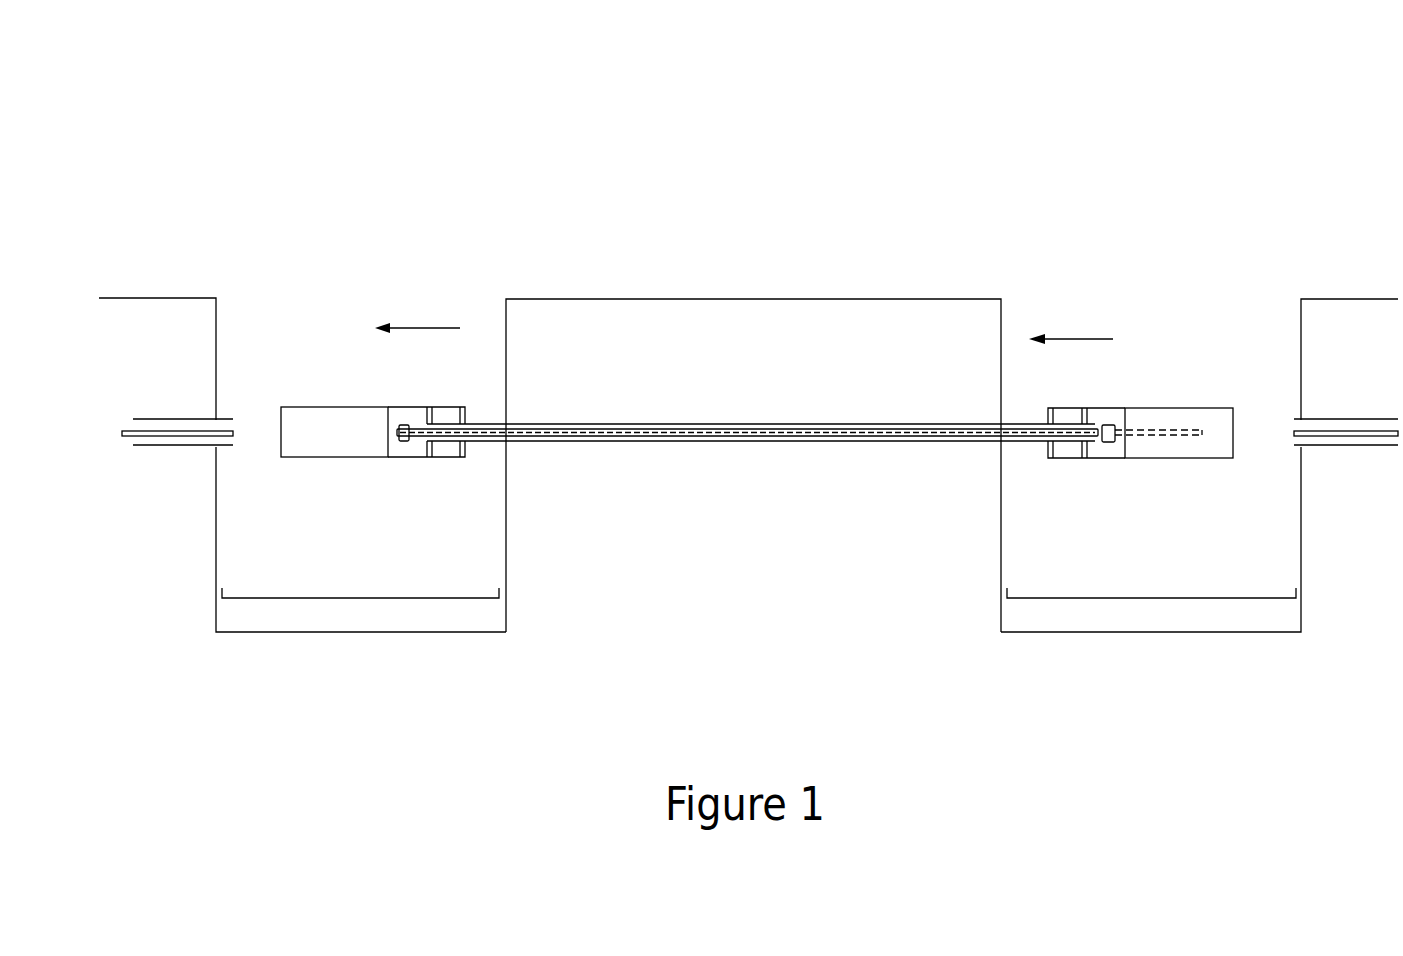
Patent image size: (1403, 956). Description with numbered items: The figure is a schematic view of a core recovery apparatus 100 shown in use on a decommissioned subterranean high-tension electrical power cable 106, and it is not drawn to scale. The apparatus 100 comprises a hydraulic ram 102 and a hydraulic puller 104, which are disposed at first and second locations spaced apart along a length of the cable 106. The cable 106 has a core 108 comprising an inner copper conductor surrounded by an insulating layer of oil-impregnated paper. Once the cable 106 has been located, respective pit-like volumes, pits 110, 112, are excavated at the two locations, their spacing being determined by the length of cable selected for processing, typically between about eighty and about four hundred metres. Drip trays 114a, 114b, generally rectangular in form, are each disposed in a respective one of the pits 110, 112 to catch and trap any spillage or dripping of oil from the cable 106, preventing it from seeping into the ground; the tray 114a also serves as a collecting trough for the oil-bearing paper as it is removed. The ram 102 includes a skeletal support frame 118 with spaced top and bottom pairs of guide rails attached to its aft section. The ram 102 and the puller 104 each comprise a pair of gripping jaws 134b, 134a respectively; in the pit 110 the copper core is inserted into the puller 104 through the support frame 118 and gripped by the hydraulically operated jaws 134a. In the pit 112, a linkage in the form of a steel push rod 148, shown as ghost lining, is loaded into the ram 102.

The core recovery apparatus 100 is at (1080, 122).
The hydraulic ram 102 is at (1197, 407).
The hydraulic puller 104 is at (359, 457).
The subterranean cable 106 is at (623, 441).
The core 108 is at (765, 432).
The pit 110 is at (216, 515).
The pit 112 is at (1302, 535).
The drip tray 114a is at (397, 598).
The drip tray 114b is at (1127, 598).
The skeletal support frame 118 is at (413, 457).
The gripping jaws 134a is at (403, 422).
The gripping jaws 134b is at (1112, 423).
The push rod 148 is at (1175, 434).